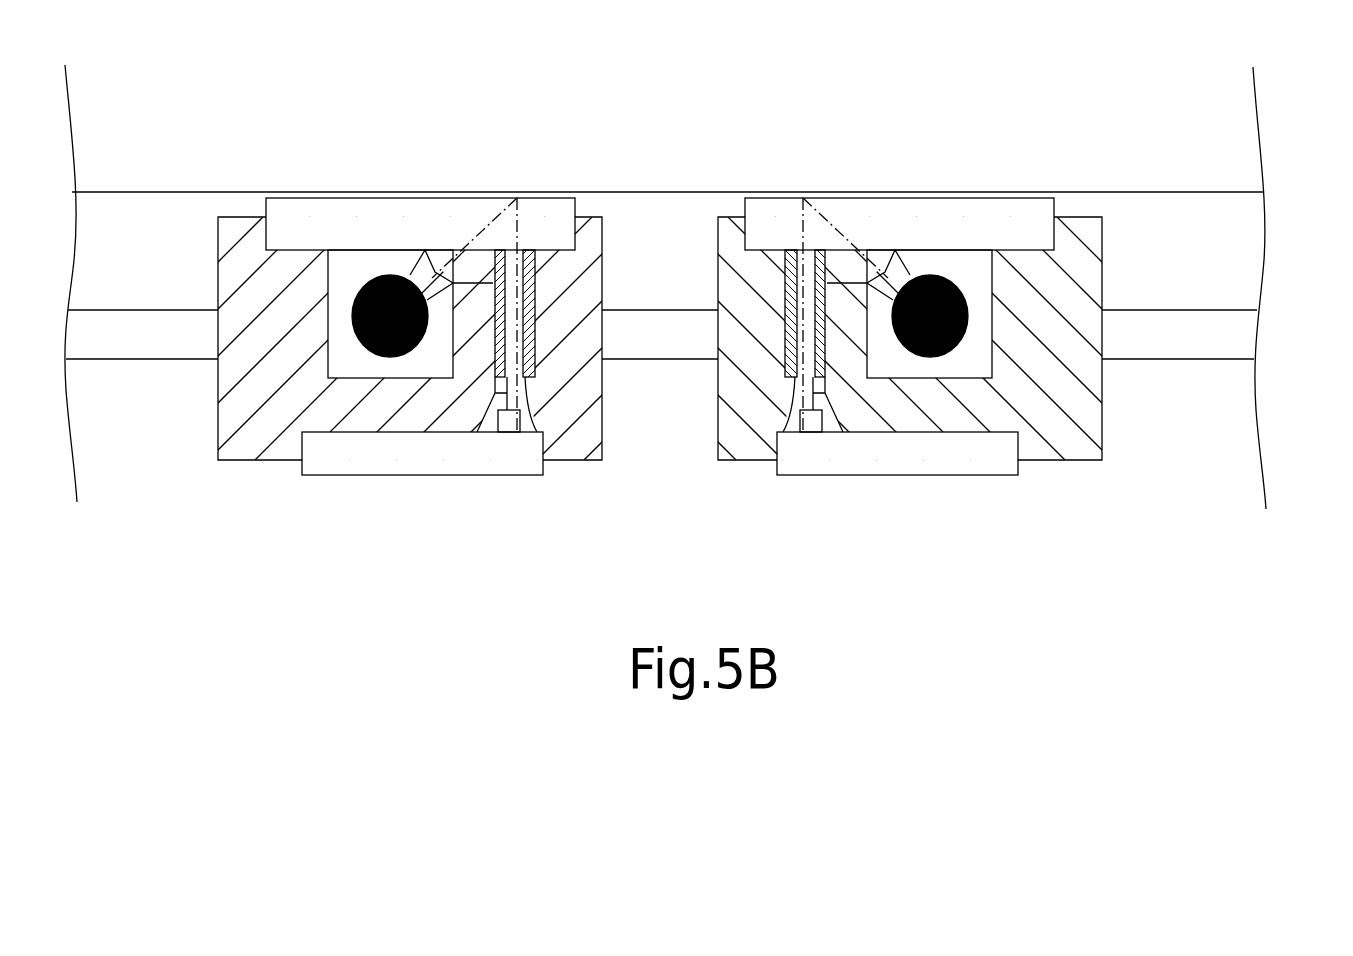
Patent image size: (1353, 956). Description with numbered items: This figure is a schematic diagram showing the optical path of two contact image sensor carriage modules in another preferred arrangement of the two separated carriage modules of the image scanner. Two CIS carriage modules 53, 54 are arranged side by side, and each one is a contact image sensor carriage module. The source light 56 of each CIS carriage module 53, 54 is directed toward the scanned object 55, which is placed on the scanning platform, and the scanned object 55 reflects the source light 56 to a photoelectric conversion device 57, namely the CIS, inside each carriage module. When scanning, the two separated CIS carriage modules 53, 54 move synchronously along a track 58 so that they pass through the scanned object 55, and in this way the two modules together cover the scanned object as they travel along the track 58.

The CIS carriage module 53 is at (567, 258).
The CIS carriage module 54 is at (1075, 257).
The scanned object 55 is at (390, 190).
The source light 56 is at (480, 227).
The photoelectric conversion device 57 is at (520, 420).
The track 58 is at (108, 320).